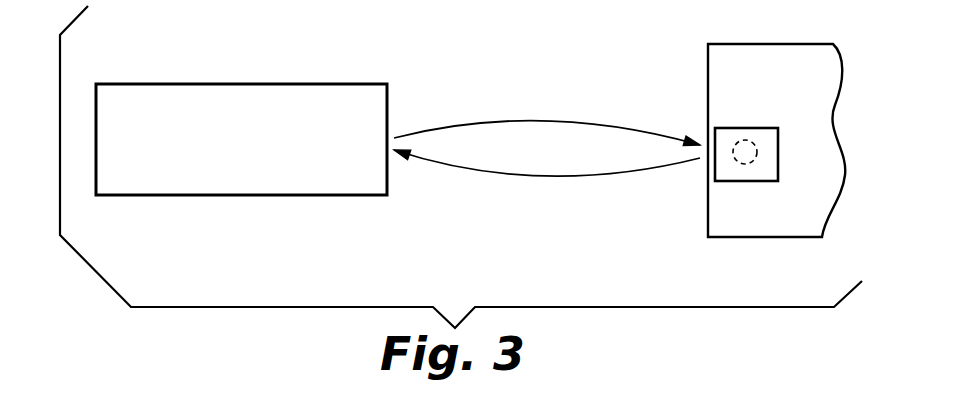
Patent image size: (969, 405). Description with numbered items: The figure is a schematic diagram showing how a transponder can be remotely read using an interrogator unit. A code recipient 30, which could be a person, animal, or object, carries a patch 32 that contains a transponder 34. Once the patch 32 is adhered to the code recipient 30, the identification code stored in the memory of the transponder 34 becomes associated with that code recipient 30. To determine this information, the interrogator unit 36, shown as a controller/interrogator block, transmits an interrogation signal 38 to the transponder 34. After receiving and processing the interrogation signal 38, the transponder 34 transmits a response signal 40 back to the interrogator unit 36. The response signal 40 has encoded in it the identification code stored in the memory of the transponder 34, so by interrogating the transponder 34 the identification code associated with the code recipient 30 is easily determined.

The code recipient 30 is at (767, 224).
The patch 32 is at (752, 127).
The transponder 34 is at (735, 160).
The interrogator unit 36 is at (272, 83).
The interrogation signal 38 is at (548, 120).
The response signal 40 is at (540, 178).